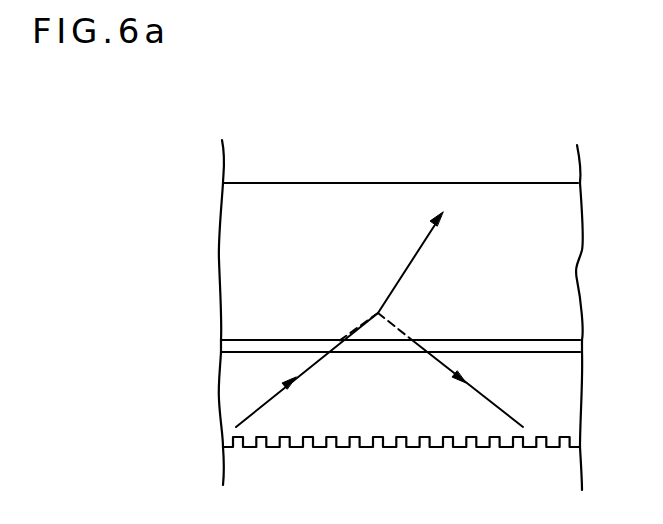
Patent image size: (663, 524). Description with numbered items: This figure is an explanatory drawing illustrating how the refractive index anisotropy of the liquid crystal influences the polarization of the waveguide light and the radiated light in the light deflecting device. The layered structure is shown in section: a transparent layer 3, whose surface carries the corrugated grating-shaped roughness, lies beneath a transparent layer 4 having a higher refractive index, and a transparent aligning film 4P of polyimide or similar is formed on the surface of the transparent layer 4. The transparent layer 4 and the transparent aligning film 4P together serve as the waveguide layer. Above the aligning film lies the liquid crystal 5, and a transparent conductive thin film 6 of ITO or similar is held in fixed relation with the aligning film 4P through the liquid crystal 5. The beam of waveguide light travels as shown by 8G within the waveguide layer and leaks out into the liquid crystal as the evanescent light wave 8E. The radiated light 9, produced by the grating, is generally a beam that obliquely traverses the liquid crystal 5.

The transparent layer 3 is at (235, 464).
The transparent layer 4 is at (236, 379).
The transparent aligning film 4P is at (232, 348).
The liquid crystal 5 is at (237, 255).
The transparent conductive thin film 6 is at (237, 170).
The evanescent light wave 8E is at (357, 323).
The waveguide light beam 8G is at (313, 372).
The radiated light 9 is at (408, 245).